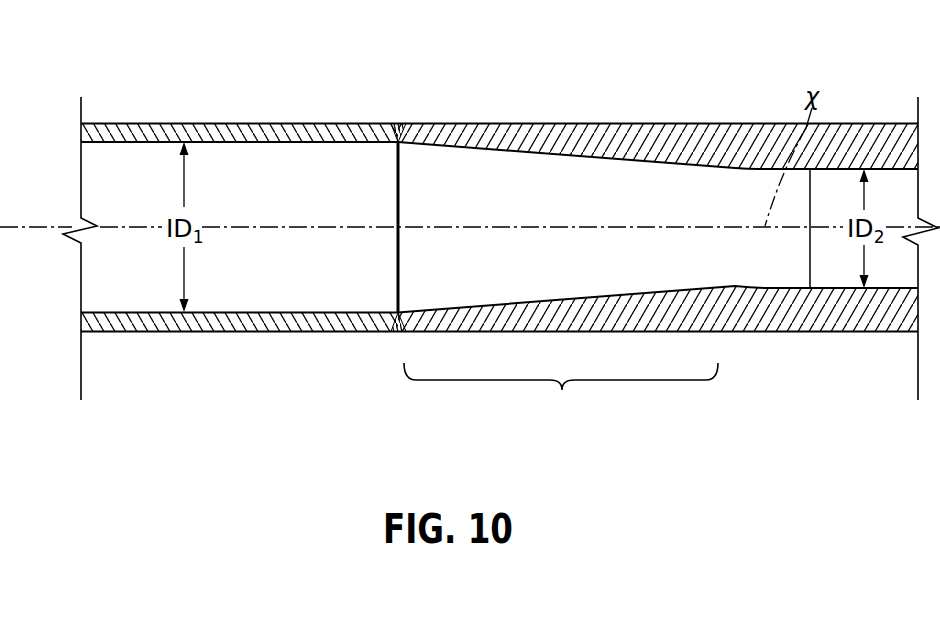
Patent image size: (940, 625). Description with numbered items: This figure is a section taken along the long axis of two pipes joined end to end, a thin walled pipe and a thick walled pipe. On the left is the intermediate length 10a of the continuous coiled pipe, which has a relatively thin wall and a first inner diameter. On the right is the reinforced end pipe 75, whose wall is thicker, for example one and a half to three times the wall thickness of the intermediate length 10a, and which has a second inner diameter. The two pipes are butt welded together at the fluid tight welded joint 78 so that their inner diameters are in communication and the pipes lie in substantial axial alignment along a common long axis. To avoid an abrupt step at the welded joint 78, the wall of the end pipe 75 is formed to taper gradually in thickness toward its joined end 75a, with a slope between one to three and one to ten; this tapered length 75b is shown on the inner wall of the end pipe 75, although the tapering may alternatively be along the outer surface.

The intermediate length of pipe 10a is at (213, 123).
The reinforced end pipe 75 is at (706, 136).
The joined end of pipe 75a is at (413, 131).
The welded joint 78 is at (398, 123).
The tapered length 75b is at (561, 394).